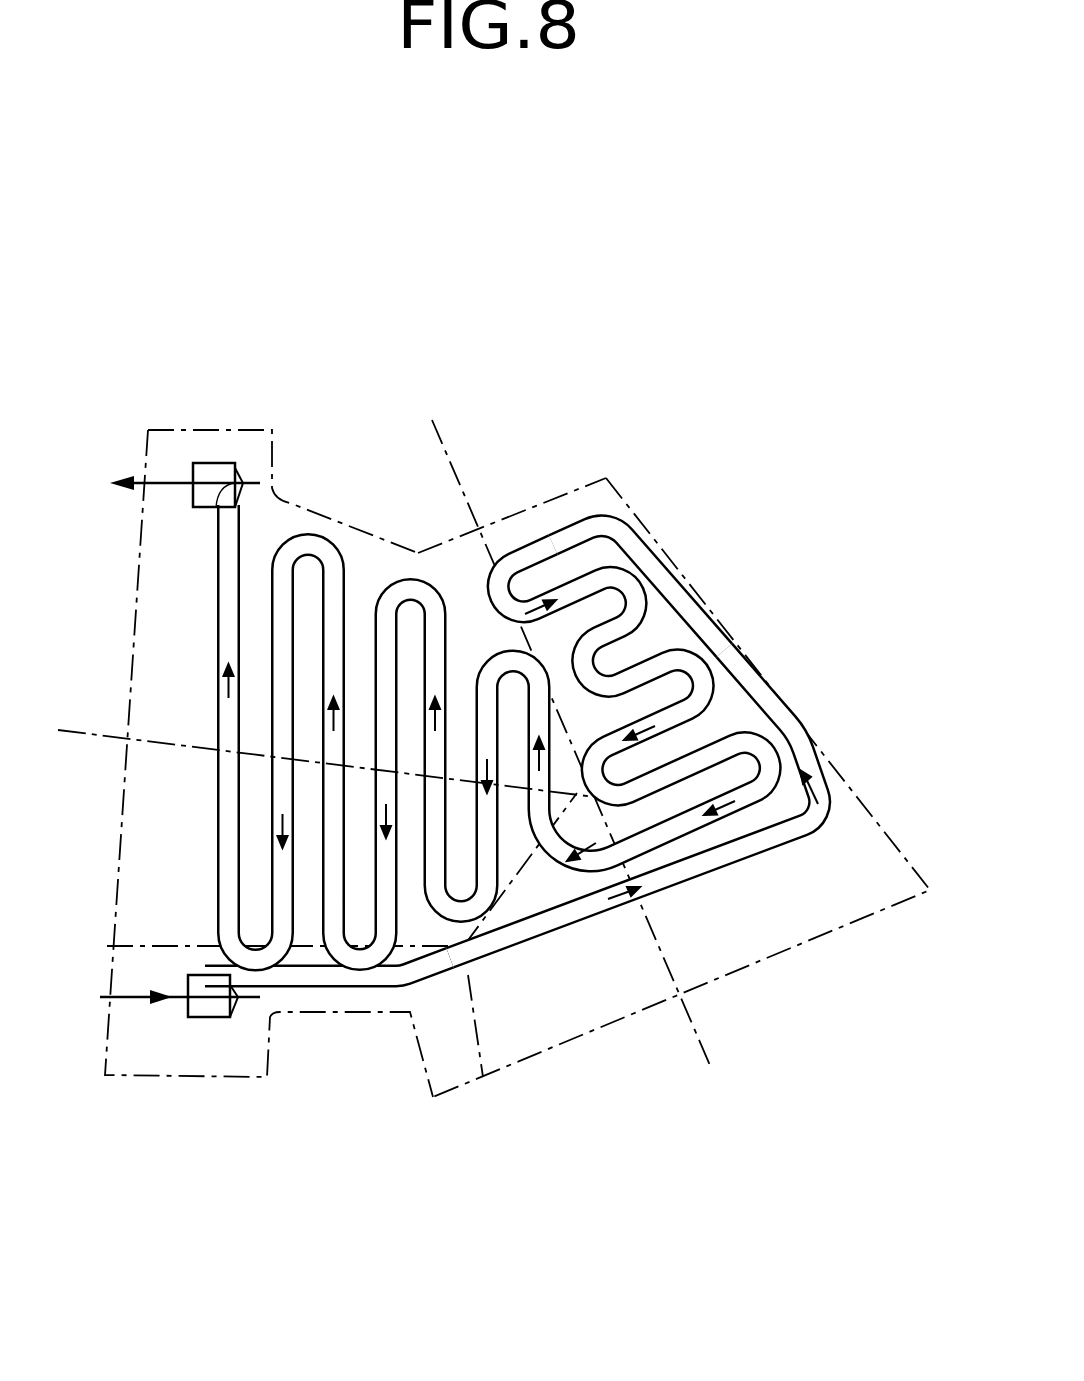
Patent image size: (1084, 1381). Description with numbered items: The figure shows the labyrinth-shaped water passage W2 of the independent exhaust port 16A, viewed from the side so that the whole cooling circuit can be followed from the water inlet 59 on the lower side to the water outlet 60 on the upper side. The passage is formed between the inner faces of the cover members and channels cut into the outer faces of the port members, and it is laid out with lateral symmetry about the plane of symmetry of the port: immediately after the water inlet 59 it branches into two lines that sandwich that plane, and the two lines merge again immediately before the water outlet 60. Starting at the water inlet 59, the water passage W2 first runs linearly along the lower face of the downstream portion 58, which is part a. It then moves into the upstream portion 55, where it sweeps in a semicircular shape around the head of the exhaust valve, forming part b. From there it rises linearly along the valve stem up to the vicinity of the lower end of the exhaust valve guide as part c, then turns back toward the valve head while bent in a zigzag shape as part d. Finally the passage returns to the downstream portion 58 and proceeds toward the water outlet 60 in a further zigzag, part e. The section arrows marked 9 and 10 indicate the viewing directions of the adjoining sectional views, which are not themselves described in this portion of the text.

The downstream portion 58 is at (343, 520).
The water outlet 60 is at (214, 463).
The water inlet 59 is at (203, 1017).
The independent exhaust port 16A is at (527, 488).
The upstream portion 55 is at (815, 737).
The water passage W2 is at (510, 960).
The part a of the water passage a is at (313, 985).
The part b of the water passage b is at (697, 878).
The part c of the water passage c is at (673, 617).
The part d of the water passage d is at (580, 637).
The part e of the water passage e is at (333, 643).
The section line 9 is at (428, 338).
The section line 10 is at (418, 1170).